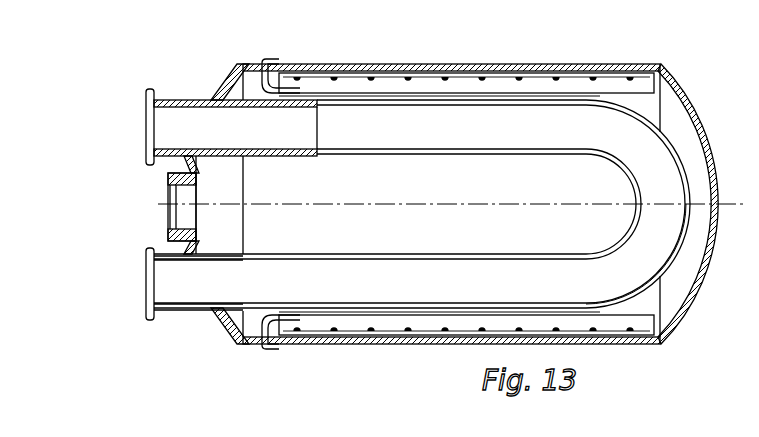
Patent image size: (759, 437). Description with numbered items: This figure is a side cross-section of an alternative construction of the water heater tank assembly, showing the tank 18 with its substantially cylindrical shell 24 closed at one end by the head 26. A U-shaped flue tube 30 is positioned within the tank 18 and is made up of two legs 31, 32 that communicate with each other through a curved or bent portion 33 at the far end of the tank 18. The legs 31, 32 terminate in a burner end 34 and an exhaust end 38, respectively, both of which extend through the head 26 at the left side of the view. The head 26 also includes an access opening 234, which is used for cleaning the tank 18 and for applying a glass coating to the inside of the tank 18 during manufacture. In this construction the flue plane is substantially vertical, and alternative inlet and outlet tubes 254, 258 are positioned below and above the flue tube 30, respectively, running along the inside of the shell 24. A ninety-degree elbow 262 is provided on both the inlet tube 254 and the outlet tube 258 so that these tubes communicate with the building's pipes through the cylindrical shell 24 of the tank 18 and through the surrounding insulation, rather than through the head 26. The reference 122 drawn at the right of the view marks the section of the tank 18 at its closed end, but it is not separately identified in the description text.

The tank 18 is at (450, 204).
The shell 24 is at (580, 70).
The head 26 is at (225, 92).
The U-shaped flue tube 30 is at (684, 142).
The leg 31 is at (467, 267).
The leg 32 is at (418, 152).
The curved or bent portion 33 is at (660, 256).
The burner end 34 is at (147, 305).
The exhaust end 38 is at (147, 108).
The longitudinal axis 122 is at (732, 202).
The access opening 234 is at (168, 219).
The inlet tube 254 is at (358, 325).
The outlet tube 258 is at (500, 82).
The 90° elbow 262 is at (272, 60).